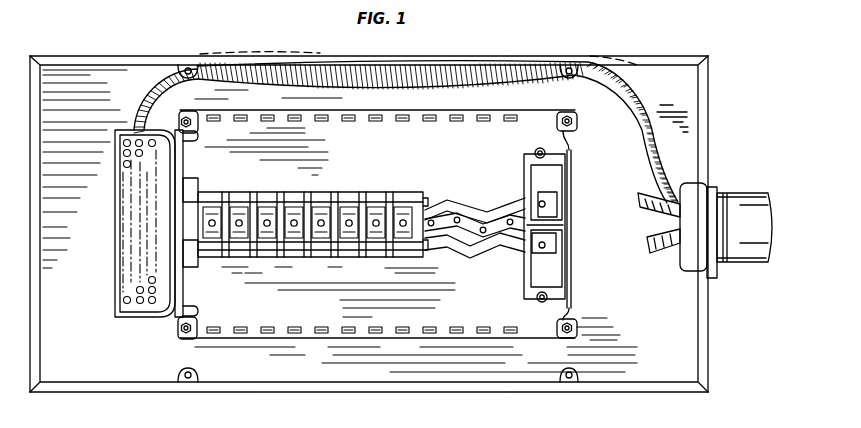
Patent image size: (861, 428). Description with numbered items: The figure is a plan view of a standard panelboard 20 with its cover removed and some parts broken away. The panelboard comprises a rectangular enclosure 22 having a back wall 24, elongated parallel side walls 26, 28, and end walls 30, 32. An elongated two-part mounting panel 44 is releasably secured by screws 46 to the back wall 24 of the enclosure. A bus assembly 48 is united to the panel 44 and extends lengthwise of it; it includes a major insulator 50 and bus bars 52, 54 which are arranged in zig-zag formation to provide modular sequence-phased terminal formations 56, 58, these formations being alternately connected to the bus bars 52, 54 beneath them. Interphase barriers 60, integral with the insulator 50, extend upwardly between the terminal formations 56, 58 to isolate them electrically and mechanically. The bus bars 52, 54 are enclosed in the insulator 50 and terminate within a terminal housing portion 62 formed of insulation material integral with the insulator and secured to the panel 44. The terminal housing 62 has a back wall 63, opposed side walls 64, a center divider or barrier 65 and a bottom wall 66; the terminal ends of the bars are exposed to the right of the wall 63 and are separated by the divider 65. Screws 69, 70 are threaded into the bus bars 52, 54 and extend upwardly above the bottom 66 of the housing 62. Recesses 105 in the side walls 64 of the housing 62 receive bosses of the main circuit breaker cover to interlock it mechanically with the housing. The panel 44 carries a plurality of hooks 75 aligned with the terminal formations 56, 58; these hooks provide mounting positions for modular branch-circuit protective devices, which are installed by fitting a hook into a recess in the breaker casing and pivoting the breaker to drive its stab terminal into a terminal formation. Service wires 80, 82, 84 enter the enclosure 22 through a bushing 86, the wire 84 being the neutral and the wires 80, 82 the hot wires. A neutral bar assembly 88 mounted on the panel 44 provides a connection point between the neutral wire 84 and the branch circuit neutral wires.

The panelboard 20 is at (509, 56).
The rectangular enclosure 22 is at (130, 56).
The back wall 24 is at (676, 96).
The side wall 26 is at (316, 58).
The side wall 28 is at (271, 392).
The end wall 30 is at (709, 340).
The end wall 32 is at (30, 196).
The mounting panel 44 is at (498, 111).
The screws 46 is at (187, 114).
The bus assembly 48 is at (305, 213).
The major insulator 50 is at (345, 191).
The bus bar 52 is at (457, 246).
The bus bar 54 is at (458, 204).
The terminal formation 56 is at (313, 256).
The terminal formation 58 is at (350, 256).
The interphase barriers 60 is at (277, 256).
The terminal housing portion 62 is at (561, 190).
The back wall 63 is at (554, 223).
The side walls 64 is at (571, 153).
The center divider 65 is at (561, 225).
The bottom wall 66 is at (553, 269).
The screw 69 is at (548, 246).
The screw 70 is at (548, 205).
The hooks 75 is at (280, 116).
The service wire 80 is at (651, 214).
The service wire 82 is at (663, 248).
The neutral wire 84 is at (153, 105).
The bushing 86 is at (685, 272).
The neutral bar assembly 88 is at (125, 320).
The recesses 105 is at (535, 151).